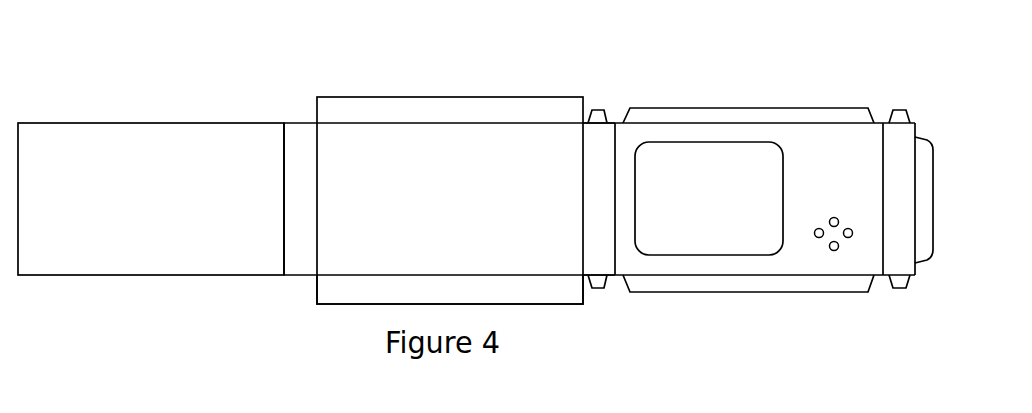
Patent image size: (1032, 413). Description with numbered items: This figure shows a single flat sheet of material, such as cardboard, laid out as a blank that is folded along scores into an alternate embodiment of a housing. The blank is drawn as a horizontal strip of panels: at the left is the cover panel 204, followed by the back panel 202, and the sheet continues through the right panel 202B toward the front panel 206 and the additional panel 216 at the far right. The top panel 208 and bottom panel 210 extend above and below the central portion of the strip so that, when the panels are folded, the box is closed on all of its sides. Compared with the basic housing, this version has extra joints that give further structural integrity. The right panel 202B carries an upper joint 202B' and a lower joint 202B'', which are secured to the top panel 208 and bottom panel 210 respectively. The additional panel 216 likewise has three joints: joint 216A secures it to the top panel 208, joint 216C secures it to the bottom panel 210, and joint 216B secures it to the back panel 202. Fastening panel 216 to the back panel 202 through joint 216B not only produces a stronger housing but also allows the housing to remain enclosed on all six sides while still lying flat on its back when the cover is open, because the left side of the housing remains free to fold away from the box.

The back panel 202 is at (383, 237).
The cover panel 204 is at (203, 218).
The front panel 206 is at (813, 252).
The top panel 208 is at (343, 109).
The bottom panel 210 is at (371, 287).
The right panel 202B is at (494, 162).
The joint 202B' is at (567, 88).
The joint 202B'' is at (563, 307).
The additional panel 216 is at (895, 238).
The joint 216A is at (888, 112).
The joint 216B is at (922, 177).
The joint 216C is at (892, 288).